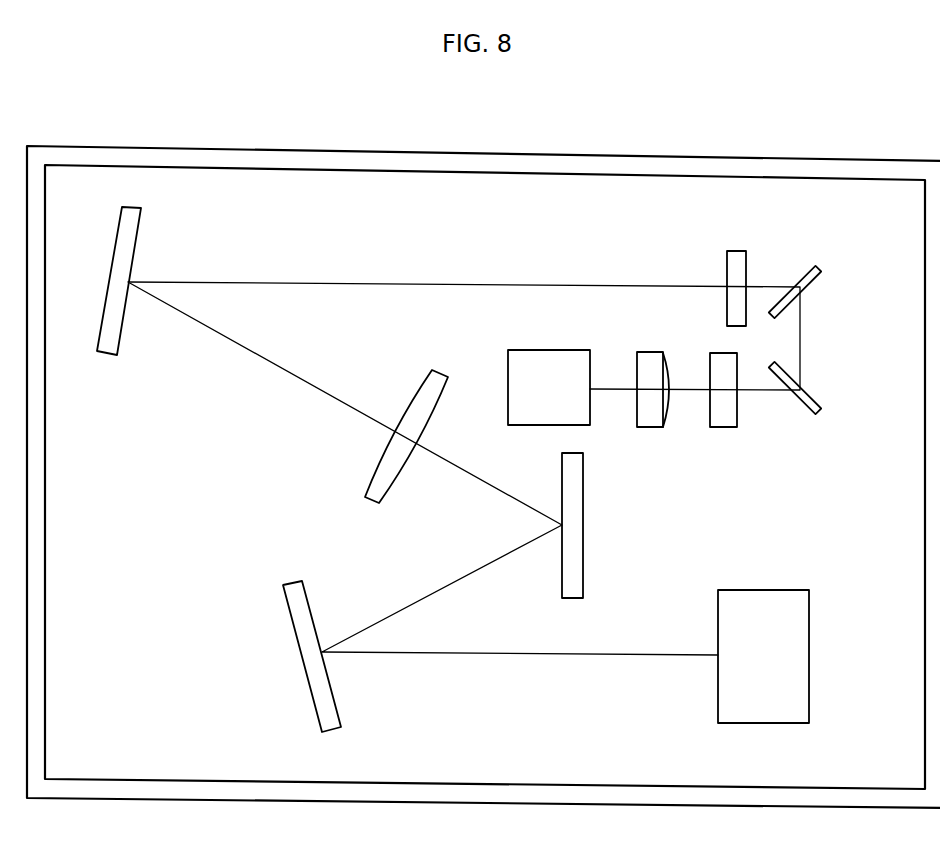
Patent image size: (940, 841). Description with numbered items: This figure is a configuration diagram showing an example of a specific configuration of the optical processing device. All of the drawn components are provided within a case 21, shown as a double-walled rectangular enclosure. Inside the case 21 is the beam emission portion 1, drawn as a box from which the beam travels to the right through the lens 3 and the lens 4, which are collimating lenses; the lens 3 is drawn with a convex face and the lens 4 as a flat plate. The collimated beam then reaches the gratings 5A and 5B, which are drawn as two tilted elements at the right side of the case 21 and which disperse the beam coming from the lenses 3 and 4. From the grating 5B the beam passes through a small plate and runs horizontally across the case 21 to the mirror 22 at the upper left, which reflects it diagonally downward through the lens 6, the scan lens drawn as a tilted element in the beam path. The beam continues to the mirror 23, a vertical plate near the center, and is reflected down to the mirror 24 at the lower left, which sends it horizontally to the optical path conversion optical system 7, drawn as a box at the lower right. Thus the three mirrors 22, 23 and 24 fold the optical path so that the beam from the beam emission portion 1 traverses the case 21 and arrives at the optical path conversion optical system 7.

The beam emission portion 1 is at (562, 349).
The lens 3 is at (652, 430).
The lens 4 is at (726, 430).
The grating 5A is at (808, 394).
The grating 5B is at (812, 288).
The lens 6 is at (437, 370).
The optical path conversion optical system 7 is at (781, 590).
The case 21 is at (527, 783).
The mirror 22 is at (142, 218).
The mirror 23 is at (583, 543).
The mirror 24 is at (292, 618).